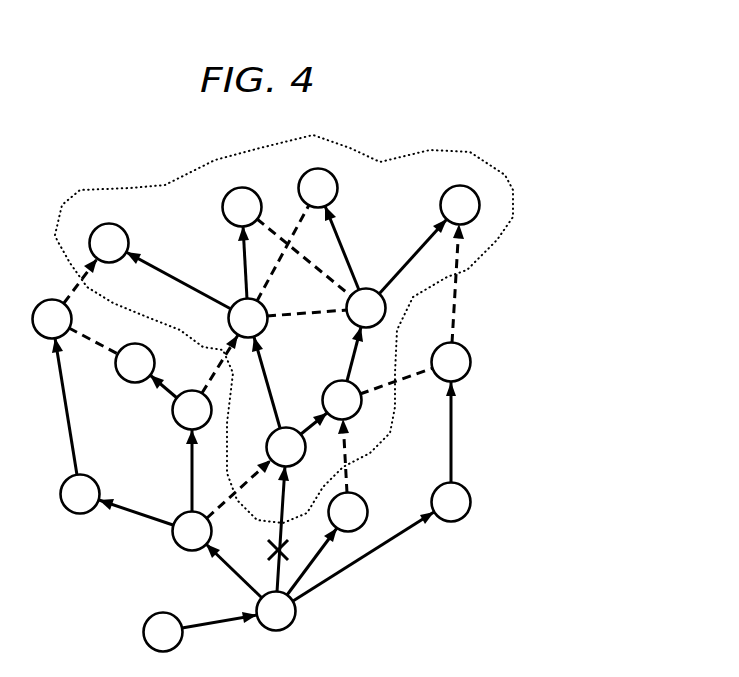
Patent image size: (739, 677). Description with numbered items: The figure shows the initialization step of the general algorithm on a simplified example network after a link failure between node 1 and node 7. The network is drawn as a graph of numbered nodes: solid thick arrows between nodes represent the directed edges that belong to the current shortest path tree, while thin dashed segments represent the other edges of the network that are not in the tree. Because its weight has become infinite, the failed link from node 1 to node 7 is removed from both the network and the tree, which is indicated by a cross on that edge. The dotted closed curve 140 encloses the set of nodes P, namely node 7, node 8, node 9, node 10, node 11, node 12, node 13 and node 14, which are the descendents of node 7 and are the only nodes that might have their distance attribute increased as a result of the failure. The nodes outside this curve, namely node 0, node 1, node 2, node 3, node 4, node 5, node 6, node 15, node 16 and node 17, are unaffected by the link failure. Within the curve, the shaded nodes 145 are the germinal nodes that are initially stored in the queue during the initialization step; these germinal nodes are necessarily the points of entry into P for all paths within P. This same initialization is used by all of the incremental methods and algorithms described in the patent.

The dotted closed curve 140 is at (513, 190).
The shaded nodes 145 is at (285, 319).
The node 0 is at (163, 632).
The node 1 is at (276, 611).
The node 2 is at (192, 531).
The node 3 is at (80, 494).
The node 4 is at (52, 319).
The node 5 is at (192, 410).
The node 6 is at (135, 363).
The node 7 is at (286, 447).
The node 8 is at (248, 318).
The node 9 is at (109, 243).
The node 10 is at (242, 207).
The node 11 is at (342, 400).
The node 12 is at (366, 308).
The node 13 is at (318, 188).
The node 14 is at (460, 205).
The node 15 is at (348, 512).
The node 16 is at (451, 502).
The node 17 is at (451, 362).